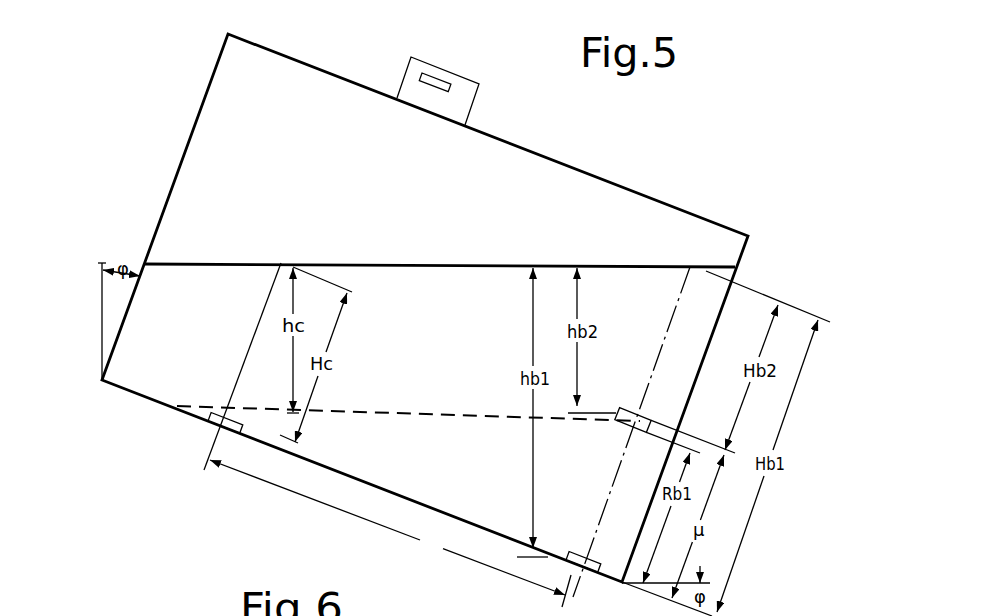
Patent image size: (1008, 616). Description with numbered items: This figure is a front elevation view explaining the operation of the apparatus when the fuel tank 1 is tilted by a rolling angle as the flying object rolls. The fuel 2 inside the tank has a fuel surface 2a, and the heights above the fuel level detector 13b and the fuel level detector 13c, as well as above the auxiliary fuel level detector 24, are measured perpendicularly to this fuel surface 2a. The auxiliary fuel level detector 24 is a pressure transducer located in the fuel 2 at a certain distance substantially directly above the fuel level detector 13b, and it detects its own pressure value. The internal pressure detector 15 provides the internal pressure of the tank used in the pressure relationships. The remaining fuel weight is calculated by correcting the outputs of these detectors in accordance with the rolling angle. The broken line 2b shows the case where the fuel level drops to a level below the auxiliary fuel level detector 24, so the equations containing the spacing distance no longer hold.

The fuel tank 1 is at (633, 192).
The fuel 2 is at (376, 478).
The fuel surface 2a is at (638, 265).
The broken line (lowered fuel level) 2b is at (417, 412).
The fuel level detector 13b is at (592, 569).
The fuel level detector 13c is at (208, 421).
The internal pressure detector 15 is at (452, 88).
The auxiliary fuel level detector 24 is at (620, 406).